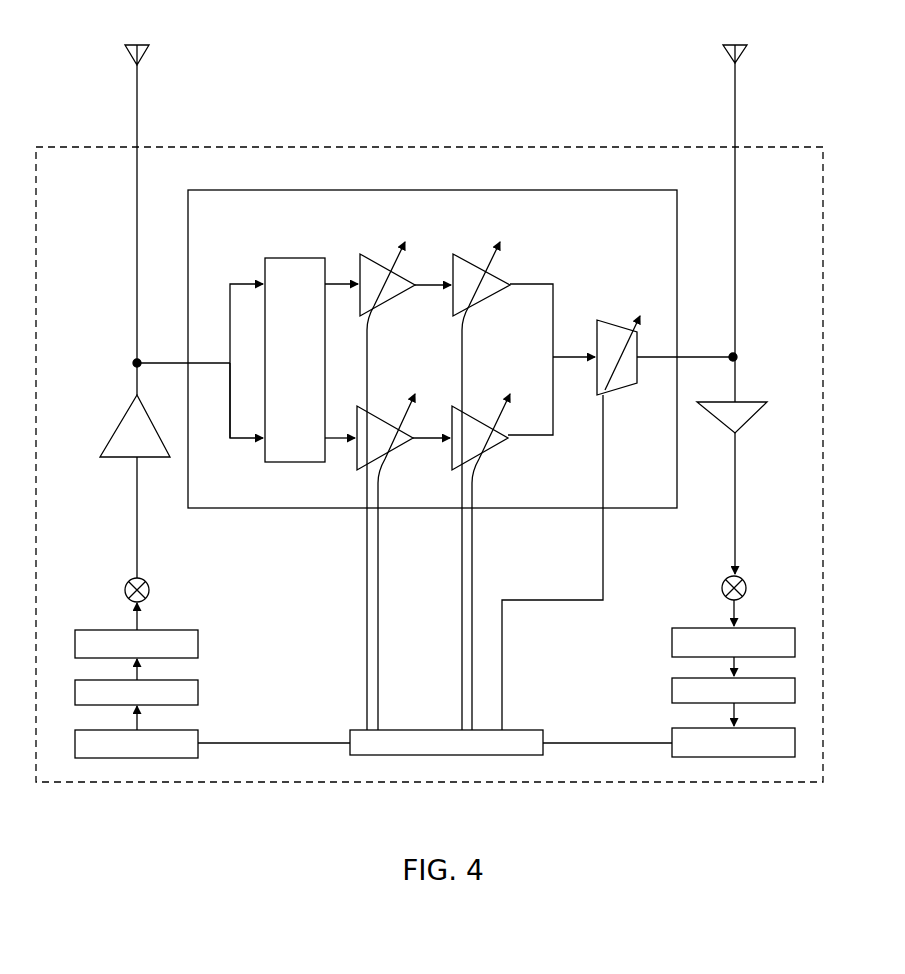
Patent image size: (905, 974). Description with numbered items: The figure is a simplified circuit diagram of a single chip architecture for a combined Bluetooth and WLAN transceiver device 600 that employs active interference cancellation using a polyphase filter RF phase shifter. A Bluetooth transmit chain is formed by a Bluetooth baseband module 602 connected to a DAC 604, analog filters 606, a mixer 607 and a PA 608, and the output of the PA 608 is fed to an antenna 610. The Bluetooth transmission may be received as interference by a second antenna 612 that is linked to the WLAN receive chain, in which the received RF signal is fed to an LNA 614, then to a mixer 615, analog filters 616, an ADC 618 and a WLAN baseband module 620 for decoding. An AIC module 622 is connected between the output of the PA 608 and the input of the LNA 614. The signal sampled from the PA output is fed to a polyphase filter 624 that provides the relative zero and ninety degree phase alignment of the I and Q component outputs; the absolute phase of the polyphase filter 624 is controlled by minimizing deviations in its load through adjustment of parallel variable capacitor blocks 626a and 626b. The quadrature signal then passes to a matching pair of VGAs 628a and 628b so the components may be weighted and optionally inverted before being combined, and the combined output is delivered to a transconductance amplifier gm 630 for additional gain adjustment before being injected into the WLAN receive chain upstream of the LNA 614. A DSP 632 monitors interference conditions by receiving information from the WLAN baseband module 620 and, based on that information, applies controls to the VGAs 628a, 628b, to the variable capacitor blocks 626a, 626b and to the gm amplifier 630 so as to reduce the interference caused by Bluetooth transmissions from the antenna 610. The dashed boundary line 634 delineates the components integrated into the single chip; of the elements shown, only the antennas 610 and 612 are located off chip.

The device 600 is at (488, 100).
The Bluetooth baseband module 602 is at (197, 730).
The DAC 604 is at (197, 680).
The analog filters 606 is at (197, 630).
The mixer 607 is at (149, 586).
The PA 608 is at (118, 457).
The antenna 610 is at (141, 58).
The antenna 612 is at (741, 58).
The LNA 614 is at (745, 437).
The mixer 615 is at (720, 586).
The analog filters 616 is at (674, 630).
The ADC 618 is at (674, 680).
The WLAN baseband module 620 is at (674, 730).
The AIC module 622 is at (310, 508).
The polyphase filter 624 is at (296, 463).
The variable capacitor block 626a is at (378, 316).
The variable capacitor block 626b is at (383, 470).
The VGA 628a is at (475, 316).
The VGA 628b is at (485, 468).
The gm amplifier 630 is at (612, 398).
The DSP 632 is at (528, 730).
The boundary line 634 is at (545, 147).